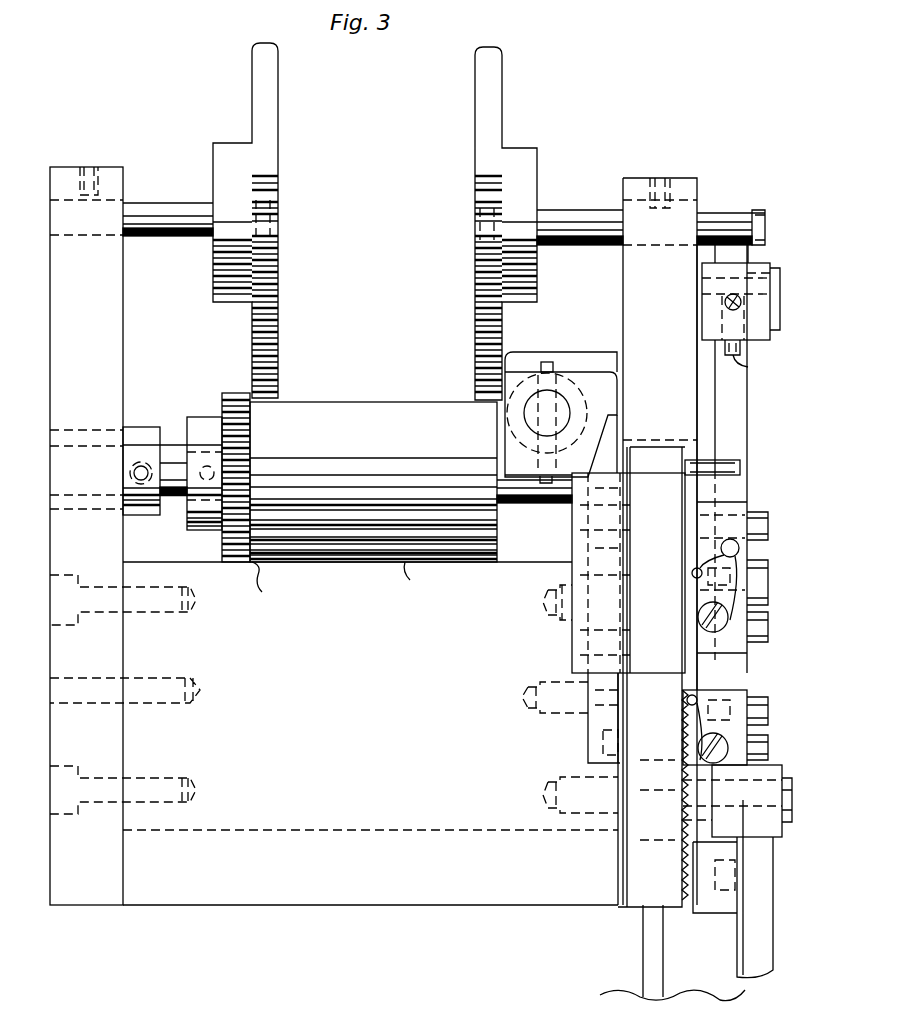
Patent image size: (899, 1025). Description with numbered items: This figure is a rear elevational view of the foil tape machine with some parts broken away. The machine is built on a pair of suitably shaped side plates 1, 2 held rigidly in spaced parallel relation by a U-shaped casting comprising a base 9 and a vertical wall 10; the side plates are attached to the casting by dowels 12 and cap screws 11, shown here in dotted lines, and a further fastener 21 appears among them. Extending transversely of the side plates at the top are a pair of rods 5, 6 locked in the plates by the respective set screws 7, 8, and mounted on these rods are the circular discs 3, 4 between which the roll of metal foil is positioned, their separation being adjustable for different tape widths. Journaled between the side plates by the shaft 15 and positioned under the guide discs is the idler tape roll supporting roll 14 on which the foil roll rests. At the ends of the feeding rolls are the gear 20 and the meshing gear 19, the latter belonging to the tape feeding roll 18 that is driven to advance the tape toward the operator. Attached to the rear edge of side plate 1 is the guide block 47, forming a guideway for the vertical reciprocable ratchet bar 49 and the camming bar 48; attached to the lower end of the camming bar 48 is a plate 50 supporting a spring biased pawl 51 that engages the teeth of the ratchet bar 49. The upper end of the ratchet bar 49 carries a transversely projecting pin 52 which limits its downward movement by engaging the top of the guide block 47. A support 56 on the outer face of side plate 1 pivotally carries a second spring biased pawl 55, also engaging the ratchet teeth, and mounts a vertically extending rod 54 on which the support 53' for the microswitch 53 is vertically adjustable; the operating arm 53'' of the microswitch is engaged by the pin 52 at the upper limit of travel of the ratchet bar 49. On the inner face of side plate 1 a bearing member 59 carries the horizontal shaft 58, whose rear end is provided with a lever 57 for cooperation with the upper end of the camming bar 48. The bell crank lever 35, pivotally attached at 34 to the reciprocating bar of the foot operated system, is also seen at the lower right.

The side plate 1 is at (660, 541).
The side plate 2 is at (86, 536).
The circular disc 3 is at (485, 100).
The circular disc 4 is at (272, 110).
The rod 5 is at (608, 213).
The rod 6 is at (190, 206).
The set screw 7 is at (672, 200).
The set screw 8 is at (100, 183).
The base 9 is at (275, 832).
The vertical wall 10 is at (370, 733).
The cap screw 11 is at (192, 612).
The dowel 12 is at (190, 708).
The tape roll supporting roll 14 is at (378, 408).
The shaft 15 is at (178, 440).
The tape feeding roll 18 is at (414, 583).
The gear 19 is at (271, 583).
The gear 20 is at (236, 393).
The bolt 21 is at (144, 600).
The pivotal attachment 34 is at (810, 797).
The bell crank lever 35 is at (765, 895).
The guide block 47 is at (572, 575).
The camming bar 48 is at (608, 735).
The ratchet bar 49 is at (640, 882).
The plate 50 is at (740, 688).
The spring biased pawl 51 is at (735, 724).
The transversely projecting pin 52 is at (725, 458).
The microswitch 53 is at (765, 284).
The support 53' is at (788, 314).
The operating arm 53'' is at (766, 363).
The vertically extending bar or rod 54 is at (745, 398).
The spring biased pawl 55 is at (785, 556).
The support 56 is at (745, 652).
The lever 57 is at (605, 382).
The horizontal shaft 58 is at (530, 418).
The bearing member 59 is at (575, 345).